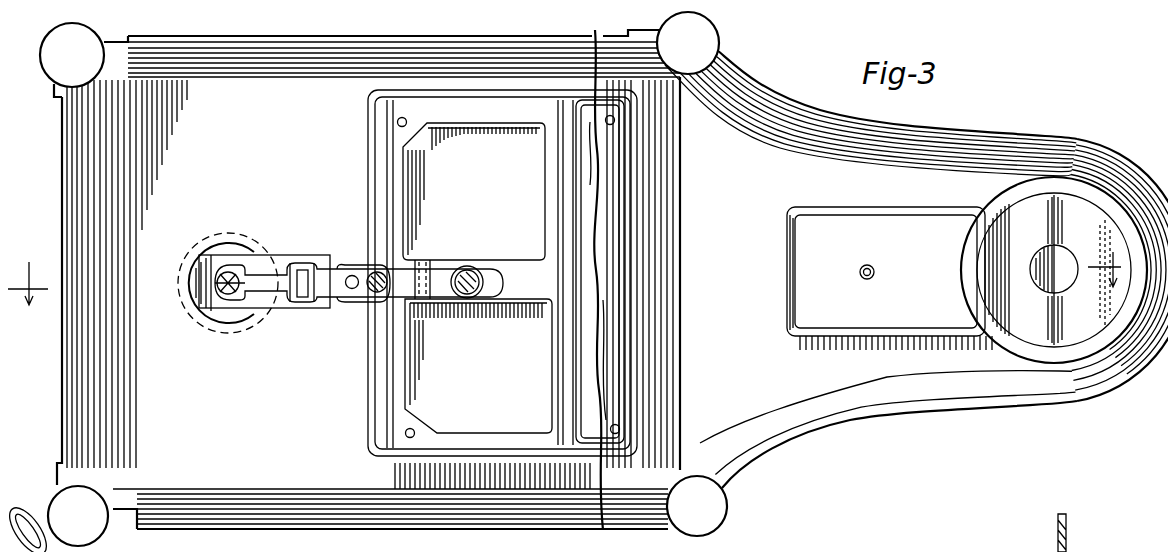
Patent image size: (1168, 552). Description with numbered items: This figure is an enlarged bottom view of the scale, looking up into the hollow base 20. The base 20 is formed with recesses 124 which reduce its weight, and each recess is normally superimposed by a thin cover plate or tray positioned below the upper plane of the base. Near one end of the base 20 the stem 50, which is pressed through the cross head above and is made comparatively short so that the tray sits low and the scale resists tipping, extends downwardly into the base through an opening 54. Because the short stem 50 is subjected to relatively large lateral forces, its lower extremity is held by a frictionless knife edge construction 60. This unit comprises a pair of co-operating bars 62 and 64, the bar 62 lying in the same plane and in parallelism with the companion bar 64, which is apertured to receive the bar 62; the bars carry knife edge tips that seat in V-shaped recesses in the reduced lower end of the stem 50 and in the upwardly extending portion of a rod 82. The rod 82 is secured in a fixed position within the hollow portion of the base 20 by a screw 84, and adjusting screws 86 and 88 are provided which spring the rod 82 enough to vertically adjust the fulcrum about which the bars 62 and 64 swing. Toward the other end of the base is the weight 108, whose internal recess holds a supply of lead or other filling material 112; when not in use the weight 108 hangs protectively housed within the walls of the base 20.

The base 20 is at (303, 521).
The stem 50 is at (230, 272).
The opening 54 is at (233, 318).
The knife edge construction 60 is at (277, 250).
The bar 62 is at (277, 289).
The bar 64 is at (310, 300).
The rod 82 is at (423, 270).
The screw 84 is at (465, 270).
The adjusting screw 86 is at (353, 274).
The adjusting screw 88 is at (369, 290).
The weight 108 is at (1022, 212).
The filling material 112 is at (1048, 278).
The recesses 124 is at (450, 165).